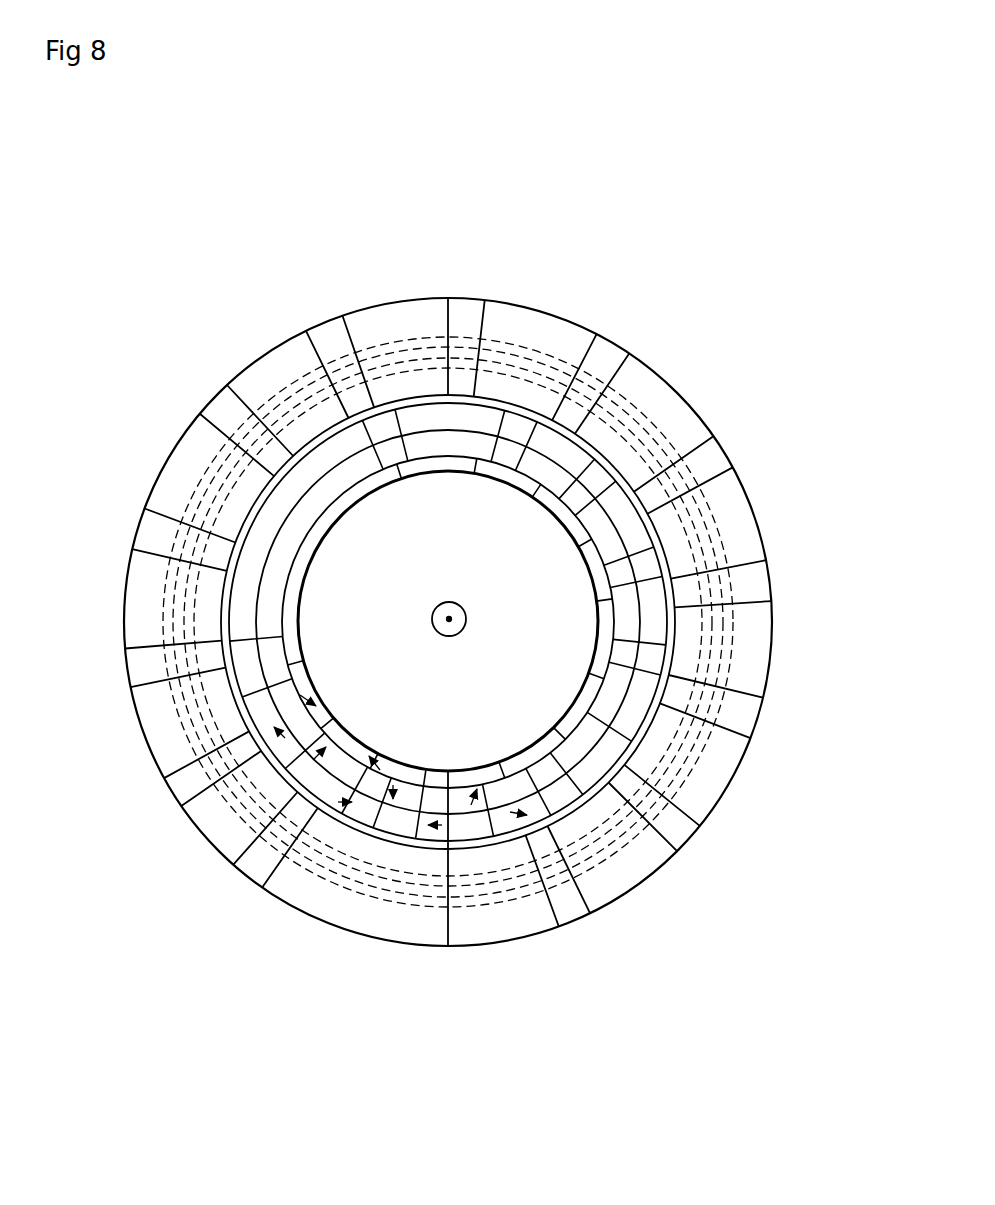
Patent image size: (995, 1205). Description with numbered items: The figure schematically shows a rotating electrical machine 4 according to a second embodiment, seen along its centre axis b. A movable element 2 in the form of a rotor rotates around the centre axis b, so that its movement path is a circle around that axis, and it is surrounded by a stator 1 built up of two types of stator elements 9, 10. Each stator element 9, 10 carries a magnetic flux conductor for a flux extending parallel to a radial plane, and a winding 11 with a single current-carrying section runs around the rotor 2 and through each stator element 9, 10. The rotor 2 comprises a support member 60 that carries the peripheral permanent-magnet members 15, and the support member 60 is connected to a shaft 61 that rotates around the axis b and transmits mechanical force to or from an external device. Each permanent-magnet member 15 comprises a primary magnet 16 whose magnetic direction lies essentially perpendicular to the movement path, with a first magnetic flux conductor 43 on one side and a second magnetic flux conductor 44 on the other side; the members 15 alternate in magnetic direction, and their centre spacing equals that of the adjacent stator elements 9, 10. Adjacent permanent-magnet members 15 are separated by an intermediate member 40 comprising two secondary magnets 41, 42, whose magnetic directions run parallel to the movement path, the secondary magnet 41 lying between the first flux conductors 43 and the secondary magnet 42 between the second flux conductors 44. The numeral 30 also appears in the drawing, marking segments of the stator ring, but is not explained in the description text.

The stator 1 is at (186, 425).
The movable element 2 is at (432, 403).
The rotating electrical machine 4 is at (734, 335).
The stator element 9 is at (262, 367).
The stator element 10 is at (370, 328).
The winding 11 is at (403, 360).
The permanent-magnet member 15 is at (493, 833).
The primary magnet 16 is at (305, 775).
The sector element 30 is at (213, 412).
The intermediate member 40 is at (528, 810).
The secondary magnet 41 is at (351, 810).
The secondary magnet 42 is at (368, 762).
The first magnetic flux conductor 43 is at (310, 800).
The second magnetic flux conductor 44 is at (288, 753).
The support member 60 is at (528, 585).
The shaft 61 is at (463, 632).
The centre axis b is at (451, 619).